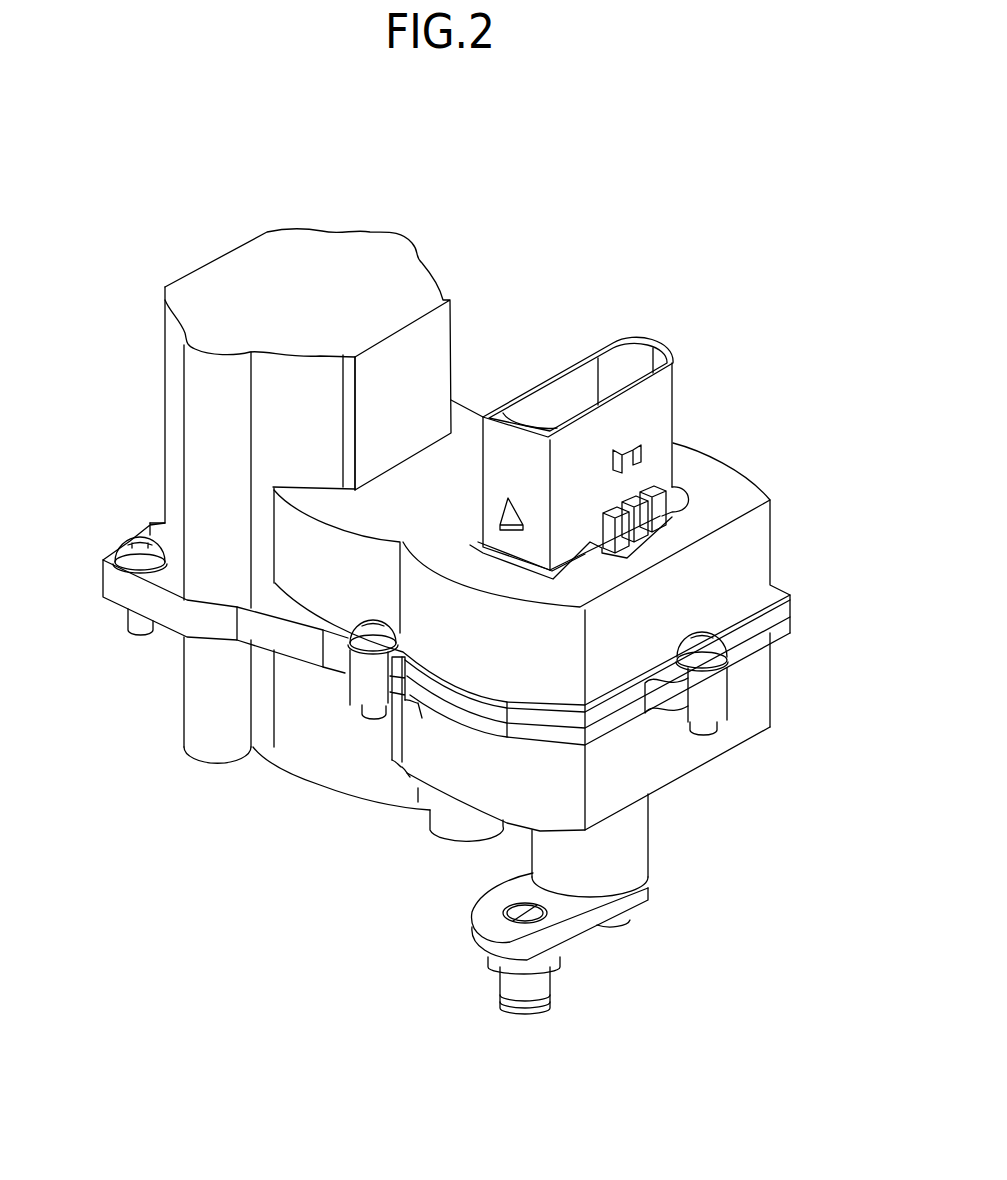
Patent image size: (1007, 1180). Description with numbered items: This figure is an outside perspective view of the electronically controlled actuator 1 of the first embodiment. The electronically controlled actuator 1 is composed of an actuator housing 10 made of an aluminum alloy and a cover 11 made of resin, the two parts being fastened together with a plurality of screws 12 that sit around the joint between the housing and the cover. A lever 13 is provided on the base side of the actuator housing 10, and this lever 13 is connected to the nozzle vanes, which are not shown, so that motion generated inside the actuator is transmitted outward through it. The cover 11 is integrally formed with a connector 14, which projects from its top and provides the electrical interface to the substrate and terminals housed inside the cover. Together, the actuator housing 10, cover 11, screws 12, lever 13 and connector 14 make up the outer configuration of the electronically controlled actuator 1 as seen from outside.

The electronically controlled actuator 1 is at (613, 163).
The actuator housing 10 is at (290, 773).
The cover 11 is at (320, 230).
The screws 12 is at (125, 545).
The lever 13 is at (477, 903).
The connector 14 is at (672, 352).